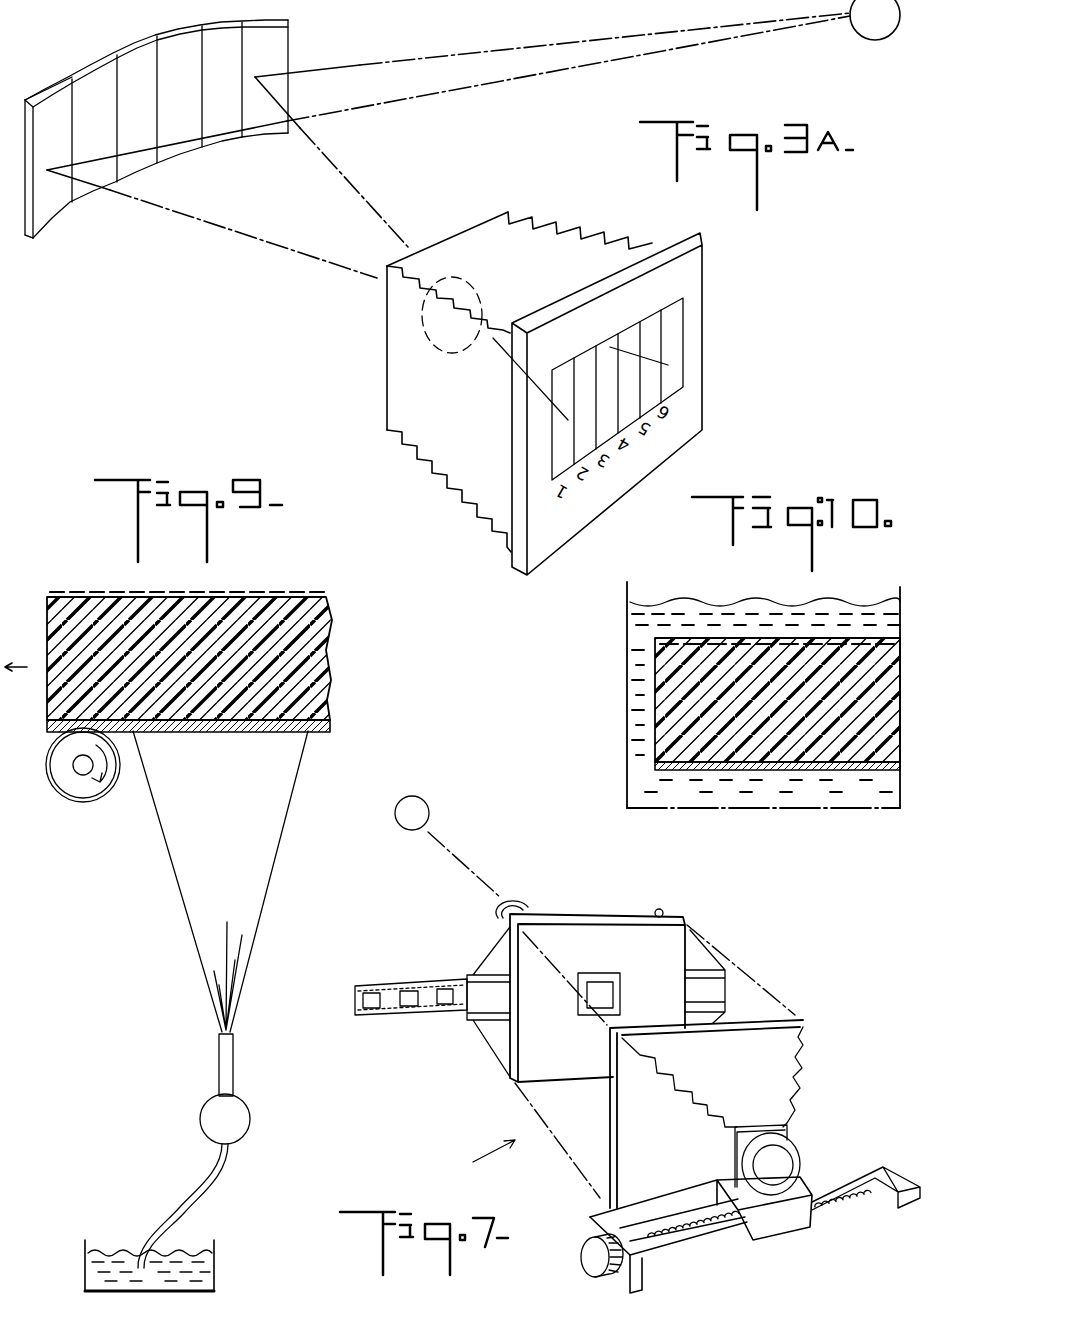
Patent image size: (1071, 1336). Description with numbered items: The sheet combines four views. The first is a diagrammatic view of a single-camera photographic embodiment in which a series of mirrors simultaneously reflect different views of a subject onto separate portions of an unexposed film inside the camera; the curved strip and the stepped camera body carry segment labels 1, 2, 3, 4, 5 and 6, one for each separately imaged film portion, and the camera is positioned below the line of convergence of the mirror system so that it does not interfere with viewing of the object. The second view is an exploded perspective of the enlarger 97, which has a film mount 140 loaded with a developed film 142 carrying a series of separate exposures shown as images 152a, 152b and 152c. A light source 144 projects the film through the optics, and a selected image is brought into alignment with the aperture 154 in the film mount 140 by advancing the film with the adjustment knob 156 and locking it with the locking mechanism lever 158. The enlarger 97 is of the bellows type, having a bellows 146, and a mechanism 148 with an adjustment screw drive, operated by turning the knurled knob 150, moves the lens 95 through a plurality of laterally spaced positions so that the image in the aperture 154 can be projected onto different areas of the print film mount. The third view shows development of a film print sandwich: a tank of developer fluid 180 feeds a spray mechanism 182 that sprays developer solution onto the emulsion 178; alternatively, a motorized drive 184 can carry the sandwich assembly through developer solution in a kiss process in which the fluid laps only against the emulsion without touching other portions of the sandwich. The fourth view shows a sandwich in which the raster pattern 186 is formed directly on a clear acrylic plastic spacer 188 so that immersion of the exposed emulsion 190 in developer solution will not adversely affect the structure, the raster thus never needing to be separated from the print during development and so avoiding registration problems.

In FIG. 3A, the filter segment 1 is at (257, 68).
In FIG. 3A, the filter segment 2 is at (214, 73).
In FIG. 3A, the filter segment 3 is at (167, 84).
In FIG. 3A, the filter segment 4 is at (124, 100).
In FIG. 3A, the filter segment 5 is at (84, 119).
In FIG. 3A, the filter segment 6 is at (48, 154).
In FIG. 9, the emulsion 178 is at (318, 745).
In FIG. 9, the tank of developer fluid 180 is at (83, 1259).
In FIG. 9, the spray mechanism 182 is at (233, 1087).
In FIG. 9, the motorized drive 184 is at (80, 787).
In FIG. 10, the raster pattern 186 is at (693, 637).
In FIG. 10, the clear acrylic plastic spacer 188 is at (665, 716).
In FIG. 10, the exposed emulsion 190 is at (797, 770).
In FIG. 7, the film mount 140 is at (563, 915).
In FIG. 7, the developed film 142 is at (452, 943).
In FIG. 7, the light source 144 is at (429, 812).
In FIG. 7, the bellows 146 is at (783, 1057).
In FIG. 7, the mechanism 148 is at (590, 1217).
In FIG. 7, the knurled knob 150 is at (590, 1254).
In FIG. 7, the image 152a is at (367, 1010).
In FIG. 7, the image 152b is at (410, 1010).
In FIG. 7, the image 152c is at (445, 1010).
In FIG. 7, the aperture 154 is at (600, 973).
In FIG. 7, the adjustment knob 156 is at (497, 915).
In FIG. 7, the locking mechanism lever 158 is at (663, 910).
In FIG. 7, the lens 95 is at (777, 1160).
In FIG. 7, the enlarger 97 is at (479, 1157).